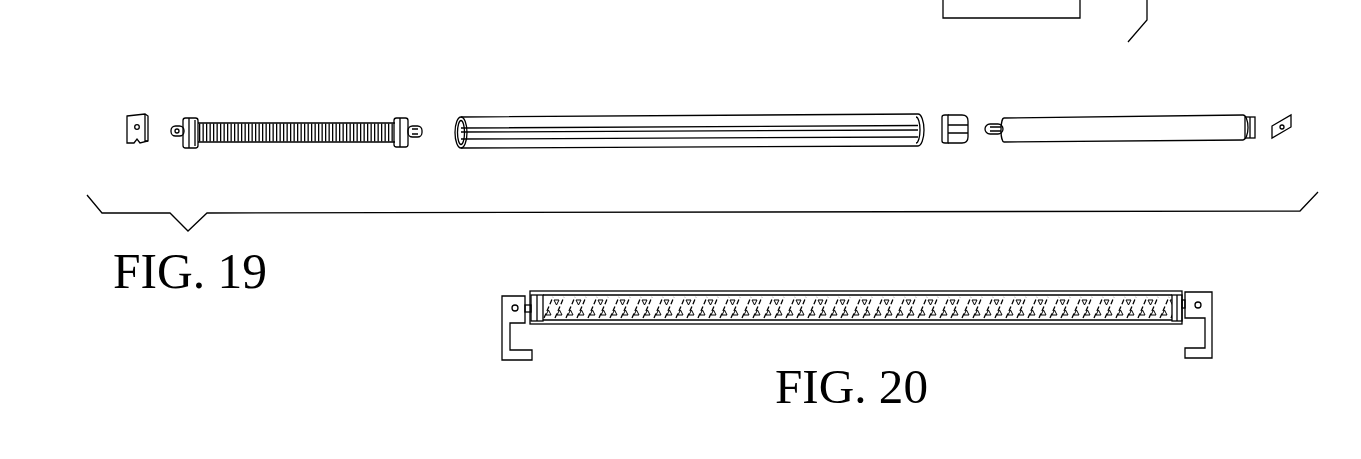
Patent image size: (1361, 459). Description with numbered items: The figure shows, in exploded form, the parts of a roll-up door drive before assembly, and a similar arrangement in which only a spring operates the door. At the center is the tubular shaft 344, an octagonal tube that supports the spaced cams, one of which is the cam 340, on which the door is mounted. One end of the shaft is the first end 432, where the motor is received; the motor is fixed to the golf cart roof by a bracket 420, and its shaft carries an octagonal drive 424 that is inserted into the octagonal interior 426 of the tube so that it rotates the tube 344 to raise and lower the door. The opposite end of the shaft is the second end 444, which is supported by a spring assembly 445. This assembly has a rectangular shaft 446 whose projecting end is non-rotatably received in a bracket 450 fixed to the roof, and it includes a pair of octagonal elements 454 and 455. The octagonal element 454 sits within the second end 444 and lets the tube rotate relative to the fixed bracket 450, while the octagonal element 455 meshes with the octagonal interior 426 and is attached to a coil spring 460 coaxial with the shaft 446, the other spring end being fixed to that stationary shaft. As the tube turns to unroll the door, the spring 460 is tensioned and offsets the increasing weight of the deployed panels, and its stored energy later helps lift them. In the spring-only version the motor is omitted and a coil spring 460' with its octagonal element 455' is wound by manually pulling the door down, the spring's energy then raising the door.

In FIG. 19, the cam 340 is at (1047, 130).
In FIG. 19, the tubular shaft 344 is at (645, 111).
In FIG. 20, the bracket 420 is at (1212, 337).
In FIG. 19, the octagonal drive 424 is at (957, 144).
In FIG. 19, the octagonal interior 426 is at (455, 119).
In FIG. 19, the first end 432 is at (907, 119).
In FIG. 19, the second end 444 is at (478, 148).
In FIG. 19, the spring assembly 445 is at (262, 152).
In FIG. 19, the rectangular shaft 446 is at (178, 124).
In FIG. 19, the bracket 450 is at (130, 114).
In FIG. 20, the bracket 450 is at (510, 337).
In FIG. 19, the octagonal element 454 is at (188, 119).
In FIG. 20, the octagonal element 454 is at (537, 298).
In FIG. 19, the octagonal element 455 is at (389, 91).
In FIG. 20, the octagonal element 455' is at (1132, 336).
In FIG. 19, the coil spring 460 is at (296, 88).
In FIG. 20, the coil spring 460' is at (856, 274).